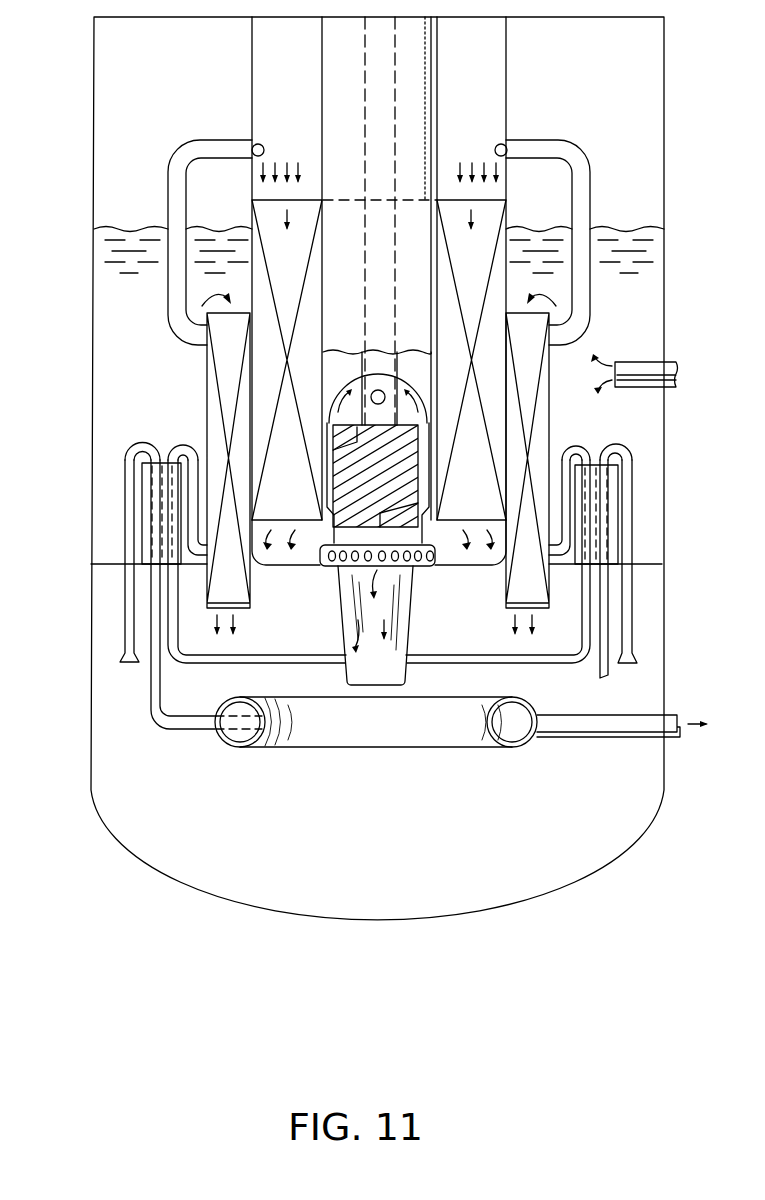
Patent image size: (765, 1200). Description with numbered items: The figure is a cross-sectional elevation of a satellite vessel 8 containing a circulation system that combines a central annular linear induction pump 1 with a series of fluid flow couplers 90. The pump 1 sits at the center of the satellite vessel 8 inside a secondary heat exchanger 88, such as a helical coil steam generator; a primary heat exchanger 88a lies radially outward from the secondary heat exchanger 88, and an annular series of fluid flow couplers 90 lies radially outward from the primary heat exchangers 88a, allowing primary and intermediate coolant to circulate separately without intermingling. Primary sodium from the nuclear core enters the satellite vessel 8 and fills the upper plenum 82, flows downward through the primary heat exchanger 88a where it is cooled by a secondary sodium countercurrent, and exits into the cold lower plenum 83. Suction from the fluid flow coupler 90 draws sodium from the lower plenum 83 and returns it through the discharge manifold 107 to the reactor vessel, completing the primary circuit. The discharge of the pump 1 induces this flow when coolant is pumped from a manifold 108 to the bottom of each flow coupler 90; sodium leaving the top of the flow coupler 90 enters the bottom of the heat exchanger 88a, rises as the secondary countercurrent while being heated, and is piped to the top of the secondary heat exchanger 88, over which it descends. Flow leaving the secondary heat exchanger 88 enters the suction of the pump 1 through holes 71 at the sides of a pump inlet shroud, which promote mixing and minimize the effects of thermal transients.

The annular linear induction pump 1 is at (404, 373).
The satellite vessel 8 is at (91, 737).
The holes 71 is at (342, 566).
The upper plenum 82 is at (161, 384).
The lower plenum 83 is at (376, 839).
The secondary heat exchanger 88 is at (297, 497).
The primary heat exchanger 88a is at (378, 474).
The fluid flow coupler 90 is at (148, 523).
The discharge manifold 107 is at (303, 749).
The manifold 108 is at (402, 678).